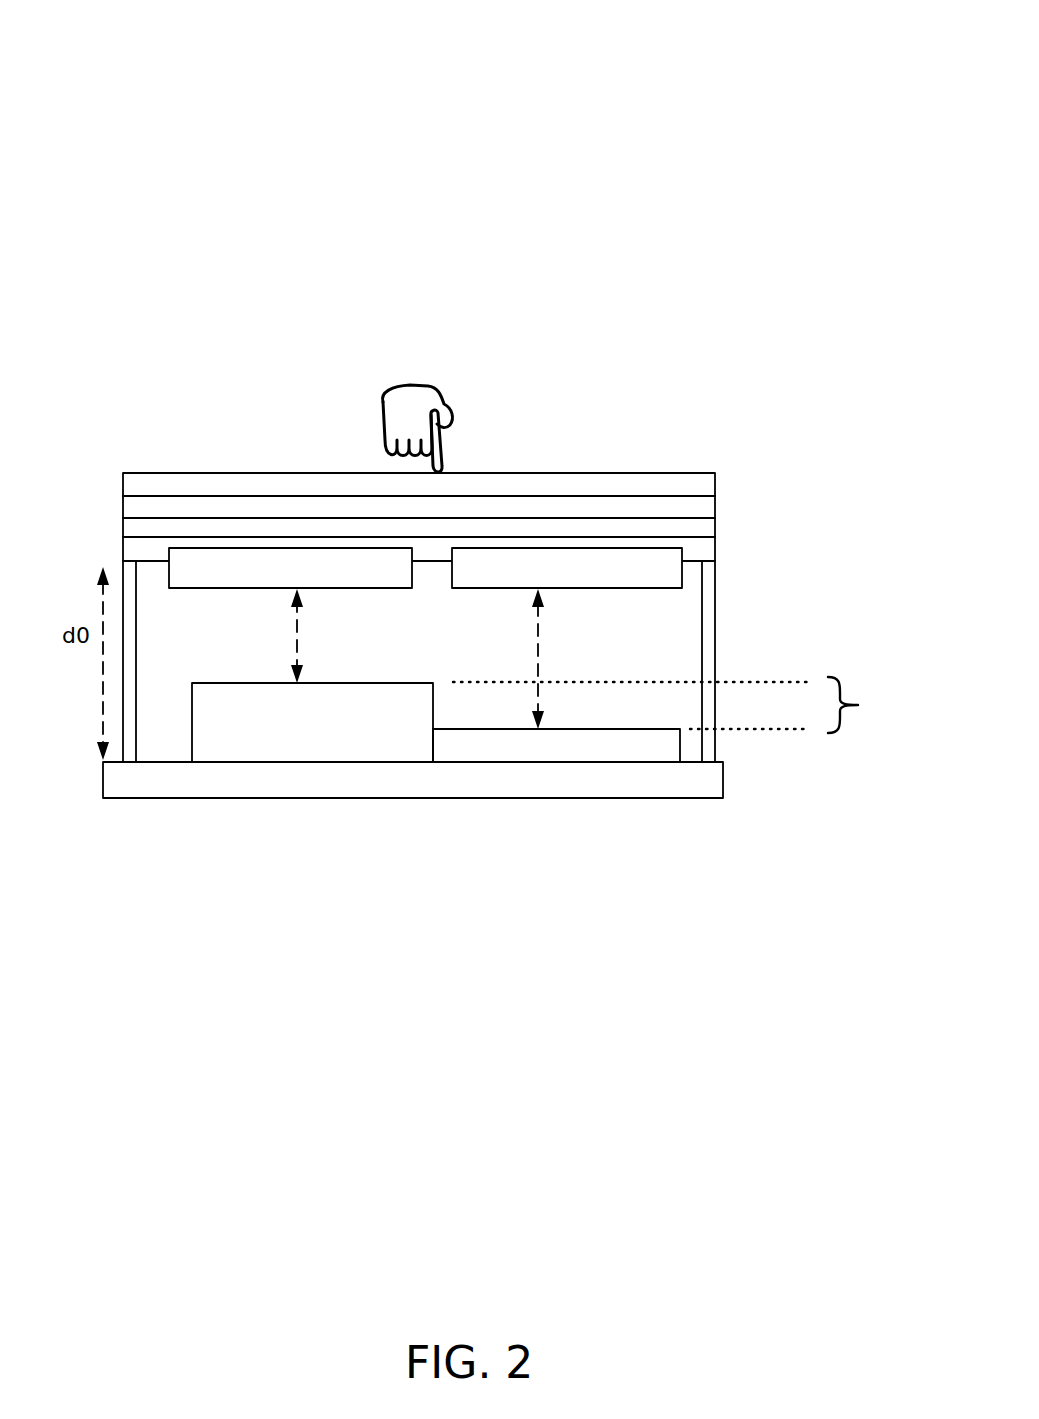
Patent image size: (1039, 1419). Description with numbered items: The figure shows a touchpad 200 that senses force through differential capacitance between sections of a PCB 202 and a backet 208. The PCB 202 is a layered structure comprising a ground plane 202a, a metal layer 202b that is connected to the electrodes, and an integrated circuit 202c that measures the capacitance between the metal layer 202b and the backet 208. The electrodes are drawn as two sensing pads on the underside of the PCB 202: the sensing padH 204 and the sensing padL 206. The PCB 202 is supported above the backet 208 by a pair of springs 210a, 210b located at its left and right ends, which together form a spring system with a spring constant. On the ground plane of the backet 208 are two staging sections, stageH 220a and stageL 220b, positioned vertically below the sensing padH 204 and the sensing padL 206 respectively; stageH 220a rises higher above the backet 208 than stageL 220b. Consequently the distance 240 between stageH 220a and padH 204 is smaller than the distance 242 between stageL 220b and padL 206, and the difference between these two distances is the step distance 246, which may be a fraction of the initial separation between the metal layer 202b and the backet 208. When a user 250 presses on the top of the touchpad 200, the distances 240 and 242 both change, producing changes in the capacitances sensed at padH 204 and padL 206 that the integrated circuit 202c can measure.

The touchpad 200 is at (218, 93).
The PCB 202 is at (677, 472).
The ground plane 202a is at (715, 523).
The metal layer 202b is at (715, 552).
The integrated circuit (IC) 202c is at (715, 502).
The sensing padH 204 is at (336, 548).
The sensing padL 206 is at (603, 548).
The backet 208 is at (383, 798).
The spring 210a is at (123, 587).
The spring 210b is at (715, 600).
The stageH 220a is at (292, 765).
The stageL 220b is at (633, 765).
The distance between stageH and padH 240 is at (297, 645).
The distance between stageL and padL 242 is at (538, 622).
The dstep 246 is at (766, 712).
The user 250 is at (405, 387).